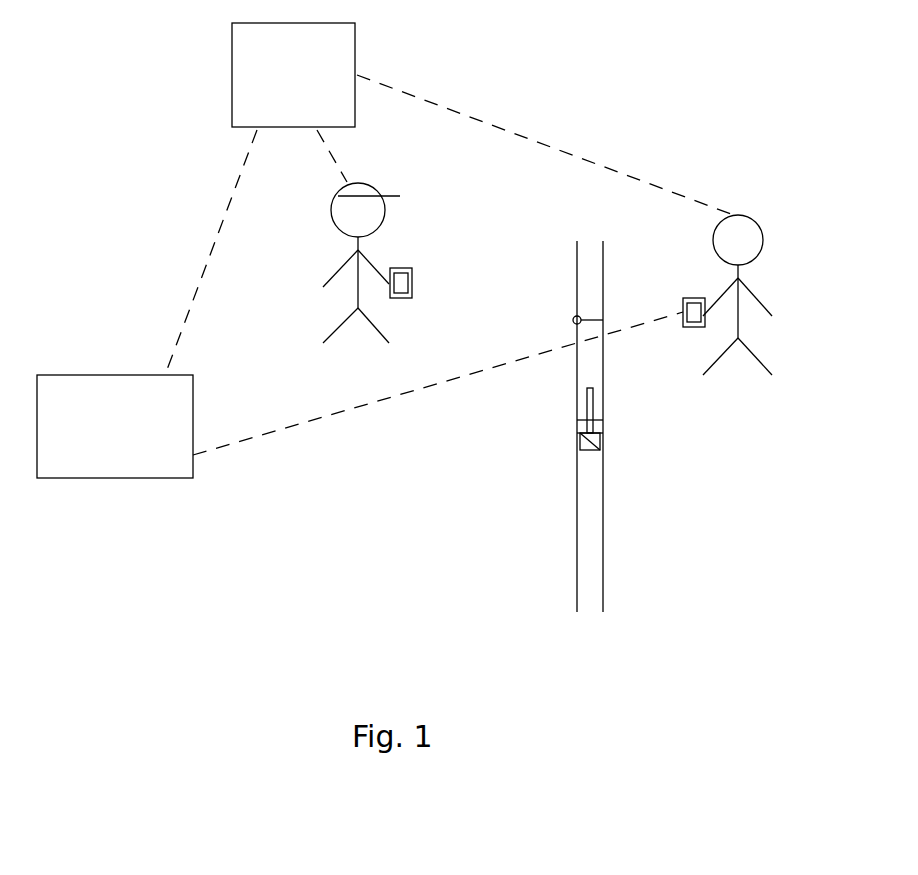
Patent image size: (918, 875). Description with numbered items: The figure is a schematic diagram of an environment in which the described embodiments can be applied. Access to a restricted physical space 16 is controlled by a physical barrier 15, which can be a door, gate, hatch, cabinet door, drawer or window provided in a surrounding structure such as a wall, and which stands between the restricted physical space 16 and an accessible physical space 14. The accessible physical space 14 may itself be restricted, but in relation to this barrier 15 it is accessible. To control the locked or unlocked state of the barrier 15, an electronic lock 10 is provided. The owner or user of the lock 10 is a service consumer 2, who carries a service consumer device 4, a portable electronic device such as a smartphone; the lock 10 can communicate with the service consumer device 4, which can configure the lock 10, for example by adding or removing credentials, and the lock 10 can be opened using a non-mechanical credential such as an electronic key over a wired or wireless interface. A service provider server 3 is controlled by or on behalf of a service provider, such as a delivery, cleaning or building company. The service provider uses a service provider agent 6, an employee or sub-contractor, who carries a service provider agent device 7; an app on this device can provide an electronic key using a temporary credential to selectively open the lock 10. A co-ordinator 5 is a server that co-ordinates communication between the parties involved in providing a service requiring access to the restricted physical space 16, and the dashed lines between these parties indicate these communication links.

The service consumer 2 is at (760, 222).
The service provider server 3 is at (284, 54).
The service consumer device 4 is at (683, 298).
The co-ordinator 5 is at (106, 406).
The service provider agent 6 is at (374, 188).
The service provider agent device 7 is at (396, 267).
The lock 10 is at (600, 438).
The accessible physical space 14 is at (424, 581).
The physical barrier 15 is at (594, 374).
The physical space 16 is at (736, 581).